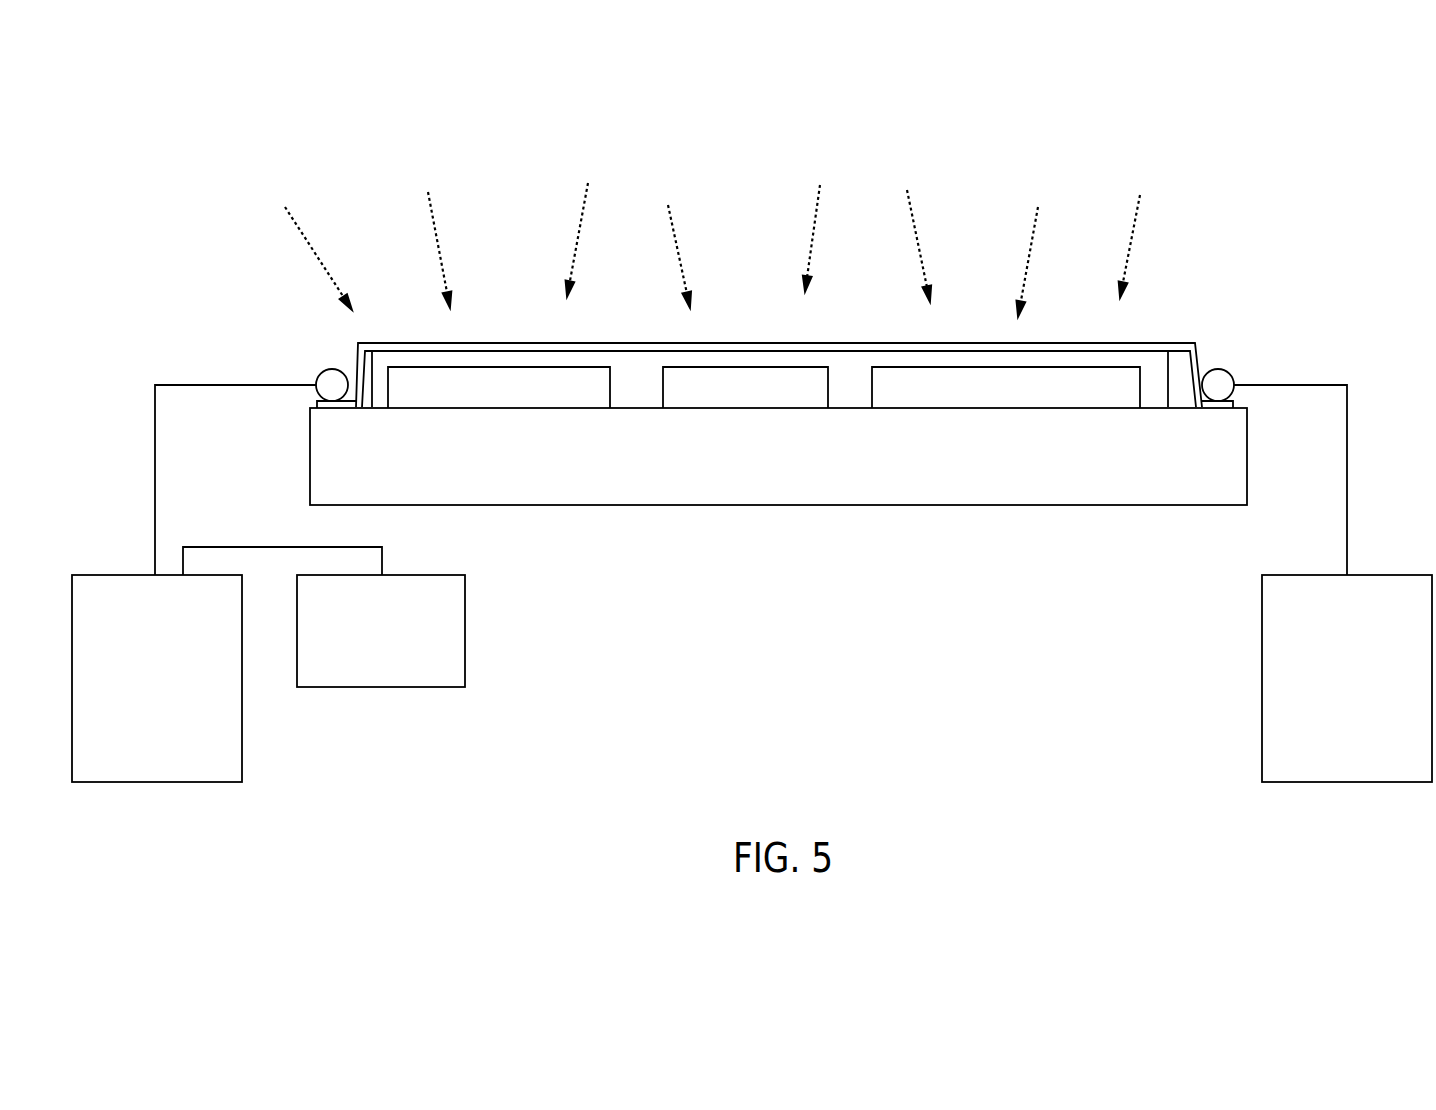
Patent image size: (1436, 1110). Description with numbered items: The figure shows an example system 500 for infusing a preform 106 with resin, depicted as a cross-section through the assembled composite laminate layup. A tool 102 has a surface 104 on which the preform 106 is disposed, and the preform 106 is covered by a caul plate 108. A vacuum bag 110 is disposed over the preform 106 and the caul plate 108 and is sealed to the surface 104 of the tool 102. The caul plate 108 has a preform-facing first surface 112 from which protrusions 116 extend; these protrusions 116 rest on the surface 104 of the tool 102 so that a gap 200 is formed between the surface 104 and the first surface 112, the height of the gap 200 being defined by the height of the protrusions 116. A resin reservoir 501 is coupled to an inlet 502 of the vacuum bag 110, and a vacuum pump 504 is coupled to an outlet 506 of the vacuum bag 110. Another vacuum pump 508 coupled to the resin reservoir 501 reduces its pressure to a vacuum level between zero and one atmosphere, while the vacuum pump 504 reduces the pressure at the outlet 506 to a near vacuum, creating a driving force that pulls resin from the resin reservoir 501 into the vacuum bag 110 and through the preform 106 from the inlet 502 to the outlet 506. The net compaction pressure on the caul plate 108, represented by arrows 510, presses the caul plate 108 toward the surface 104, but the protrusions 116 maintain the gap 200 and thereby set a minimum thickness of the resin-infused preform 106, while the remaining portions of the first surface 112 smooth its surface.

The system 500 is at (172, 94).
The arrows 510 is at (313, 250).
The inlet 502 is at (331, 369).
The outlet 506 is at (1226, 372).
The preform 106 is at (520, 390).
The caul plate 108 is at (635, 372).
The vacuum bag 110 is at (785, 345).
The first surface 112 is at (1065, 368).
The protrusions 116 is at (625, 398).
The surface 104 is at (655, 408).
The gap 200 is at (895, 401).
The tool 102 is at (840, 505).
The resin reservoir 501 is at (135, 692).
The vacuum pump 508 is at (359, 644).
The vacuum pump 504 is at (1326, 692).